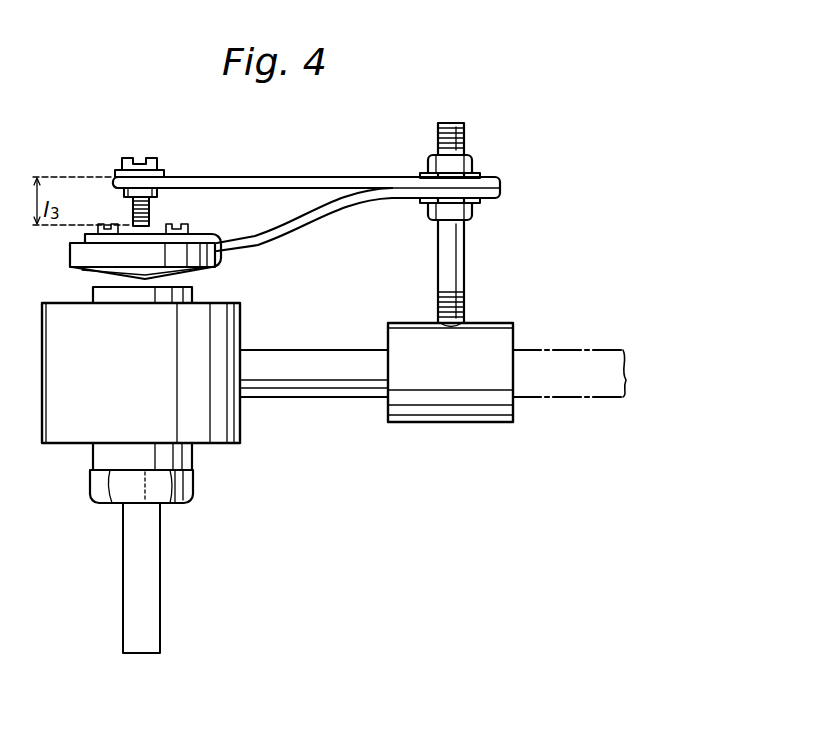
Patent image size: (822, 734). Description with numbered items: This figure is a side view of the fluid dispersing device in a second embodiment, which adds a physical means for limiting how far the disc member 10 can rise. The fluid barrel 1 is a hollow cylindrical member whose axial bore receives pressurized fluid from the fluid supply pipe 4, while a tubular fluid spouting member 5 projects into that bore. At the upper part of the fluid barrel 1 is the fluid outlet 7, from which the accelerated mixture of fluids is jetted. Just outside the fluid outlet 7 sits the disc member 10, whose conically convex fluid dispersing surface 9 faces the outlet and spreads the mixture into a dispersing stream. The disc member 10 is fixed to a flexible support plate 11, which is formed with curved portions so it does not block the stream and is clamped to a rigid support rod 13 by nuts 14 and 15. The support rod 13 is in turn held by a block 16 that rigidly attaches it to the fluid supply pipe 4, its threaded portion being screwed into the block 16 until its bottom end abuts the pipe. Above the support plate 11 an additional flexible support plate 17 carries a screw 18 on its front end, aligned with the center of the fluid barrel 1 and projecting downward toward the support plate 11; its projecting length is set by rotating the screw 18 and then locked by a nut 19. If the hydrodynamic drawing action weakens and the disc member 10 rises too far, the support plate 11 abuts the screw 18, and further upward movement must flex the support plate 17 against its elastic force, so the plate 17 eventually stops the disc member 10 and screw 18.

The fluid barrel 1 is at (52, 393).
The fluid supply pipe 4 is at (322, 385).
The tubular fluid spouting member 5 is at (160, 568).
The fluid outlet 7 is at (108, 282).
The fluid dispersing surface 9 is at (185, 279).
The disc member 10 is at (212, 258).
The flexible support plate 11 is at (321, 229).
The rigid support rod 13 is at (462, 265).
The nut 14 is at (473, 165).
The nut 15 is at (473, 213).
The block 16 is at (460, 408).
The additional flexible support plate 17 is at (300, 178).
The screw 18 is at (150, 210).
The nut 19 is at (160, 190).